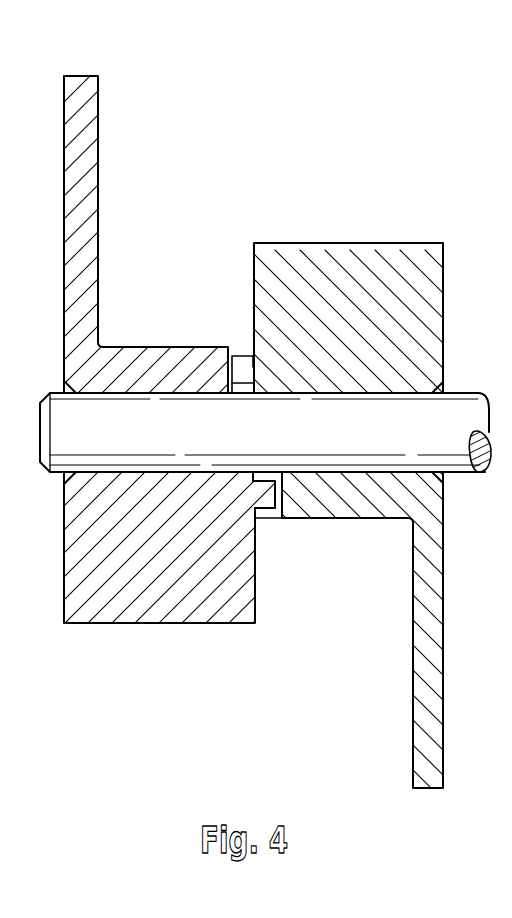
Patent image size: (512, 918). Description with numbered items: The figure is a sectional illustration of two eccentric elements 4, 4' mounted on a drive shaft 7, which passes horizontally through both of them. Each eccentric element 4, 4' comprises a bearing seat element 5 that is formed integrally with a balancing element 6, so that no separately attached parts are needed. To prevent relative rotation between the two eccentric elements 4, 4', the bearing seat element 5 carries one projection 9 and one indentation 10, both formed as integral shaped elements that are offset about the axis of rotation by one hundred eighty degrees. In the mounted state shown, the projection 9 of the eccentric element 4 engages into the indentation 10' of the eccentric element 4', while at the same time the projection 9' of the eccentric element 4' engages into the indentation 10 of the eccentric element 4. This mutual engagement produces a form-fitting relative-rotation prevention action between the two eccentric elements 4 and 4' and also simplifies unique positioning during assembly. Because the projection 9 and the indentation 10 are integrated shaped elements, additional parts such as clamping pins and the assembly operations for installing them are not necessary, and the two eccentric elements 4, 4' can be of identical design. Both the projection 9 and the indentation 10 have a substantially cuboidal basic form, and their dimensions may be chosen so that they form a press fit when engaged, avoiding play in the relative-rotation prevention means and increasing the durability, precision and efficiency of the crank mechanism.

The eccentric element 4 is at (169, 601).
The eccentric element 4' is at (256, 319).
The bearing seat element 5 is at (168, 603).
The balancing element 6 is at (84, 152).
The drive shaft 7 is at (462, 412).
The projection 9 is at (269, 539).
The projection 9' is at (242, 321).
The indentation 10 is at (215, 326).
The indentation 10' is at (295, 539).